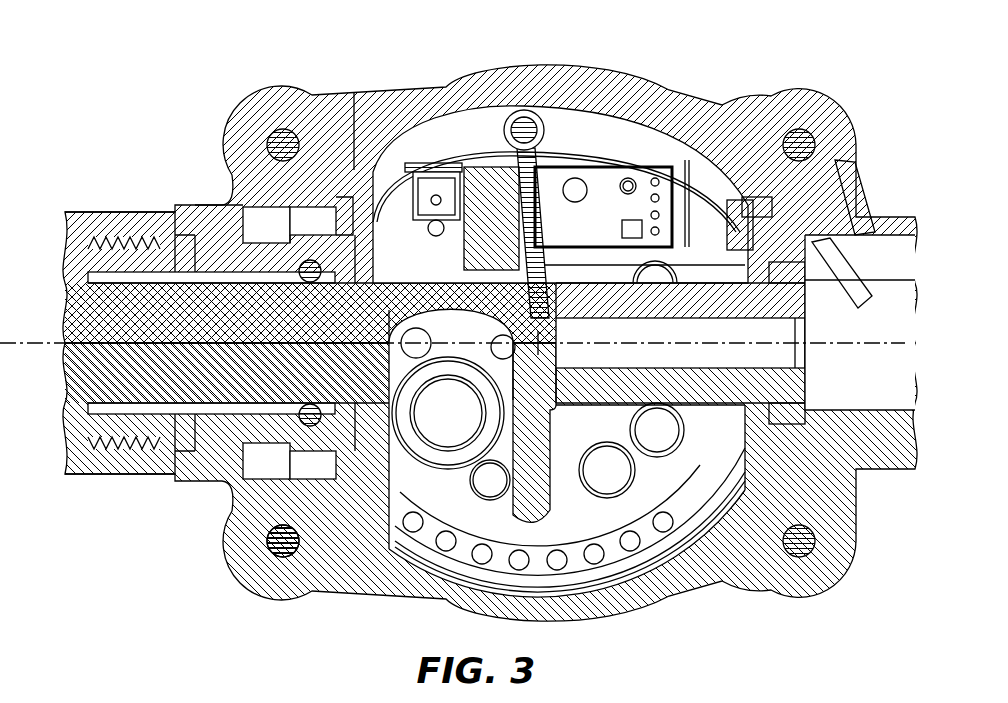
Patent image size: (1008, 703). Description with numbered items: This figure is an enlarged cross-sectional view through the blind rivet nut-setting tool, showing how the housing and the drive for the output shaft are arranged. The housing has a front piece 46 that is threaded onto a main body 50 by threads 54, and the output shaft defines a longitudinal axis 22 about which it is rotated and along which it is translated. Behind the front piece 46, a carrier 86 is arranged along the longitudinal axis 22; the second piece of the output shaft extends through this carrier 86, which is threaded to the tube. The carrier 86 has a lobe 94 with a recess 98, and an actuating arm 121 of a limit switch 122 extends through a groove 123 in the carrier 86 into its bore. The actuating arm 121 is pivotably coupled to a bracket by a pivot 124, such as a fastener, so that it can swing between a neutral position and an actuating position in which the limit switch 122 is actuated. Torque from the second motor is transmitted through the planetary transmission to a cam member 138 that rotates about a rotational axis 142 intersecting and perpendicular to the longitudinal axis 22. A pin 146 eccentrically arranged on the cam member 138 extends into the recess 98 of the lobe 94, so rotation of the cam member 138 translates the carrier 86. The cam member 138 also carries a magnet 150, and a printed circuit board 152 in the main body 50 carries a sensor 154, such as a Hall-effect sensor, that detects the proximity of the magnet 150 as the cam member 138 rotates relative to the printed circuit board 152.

The longitudinal axis 22 is at (45, 345).
The front piece 46 is at (80, 472).
The main body 50 is at (233, 503).
The threads 54 is at (104, 238).
The carrier 86 is at (715, 362).
The lobe 94 is at (419, 597).
The recess 98 is at (277, 600).
The actuating arm 121 is at (436, 200).
The limit switch 122 is at (486, 187).
The groove 123 is at (550, 290).
The pivot 124 is at (508, 128).
The cam member 138 is at (538, 512).
The rotational axis 142 is at (640, 455).
The pin 146 is at (233, 567).
The magnet 150 is at (600, 472).
The printed circuit board 152 is at (352, 165).
The sensor 154 is at (636, 218).